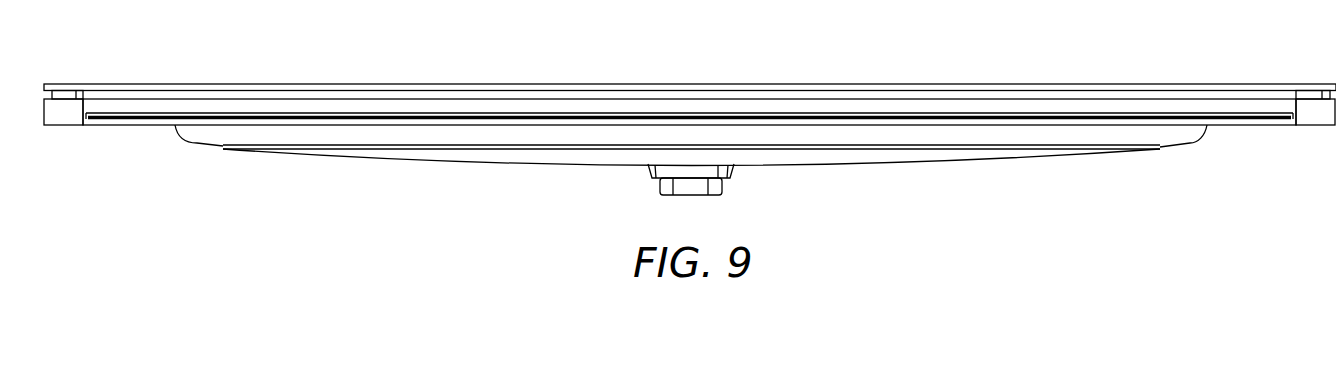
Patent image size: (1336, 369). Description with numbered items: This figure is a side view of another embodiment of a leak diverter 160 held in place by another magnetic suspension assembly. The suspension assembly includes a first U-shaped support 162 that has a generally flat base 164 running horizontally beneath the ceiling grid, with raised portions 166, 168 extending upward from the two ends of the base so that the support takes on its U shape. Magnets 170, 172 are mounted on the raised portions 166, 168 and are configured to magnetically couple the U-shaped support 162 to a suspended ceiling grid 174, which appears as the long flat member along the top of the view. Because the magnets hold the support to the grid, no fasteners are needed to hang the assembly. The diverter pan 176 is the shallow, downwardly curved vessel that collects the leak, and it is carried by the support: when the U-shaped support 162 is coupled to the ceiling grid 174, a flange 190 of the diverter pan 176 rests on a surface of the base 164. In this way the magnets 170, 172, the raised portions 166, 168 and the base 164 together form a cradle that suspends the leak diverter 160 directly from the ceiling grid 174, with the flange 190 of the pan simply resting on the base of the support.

The leak diverter 160 is at (1064, 196).
The first U-shaped support 162 is at (118, 125).
The base 164 is at (145, 126).
The raised portion 166 is at (63, 108).
The raised portion 168 is at (1315, 108).
The magnet 170 is at (85, 94).
The magnet 172 is at (1296, 95).
The suspended ceiling grid 174 is at (772, 84).
The diverter pan 176 is at (566, 153).
The flange 190 is at (190, 111).